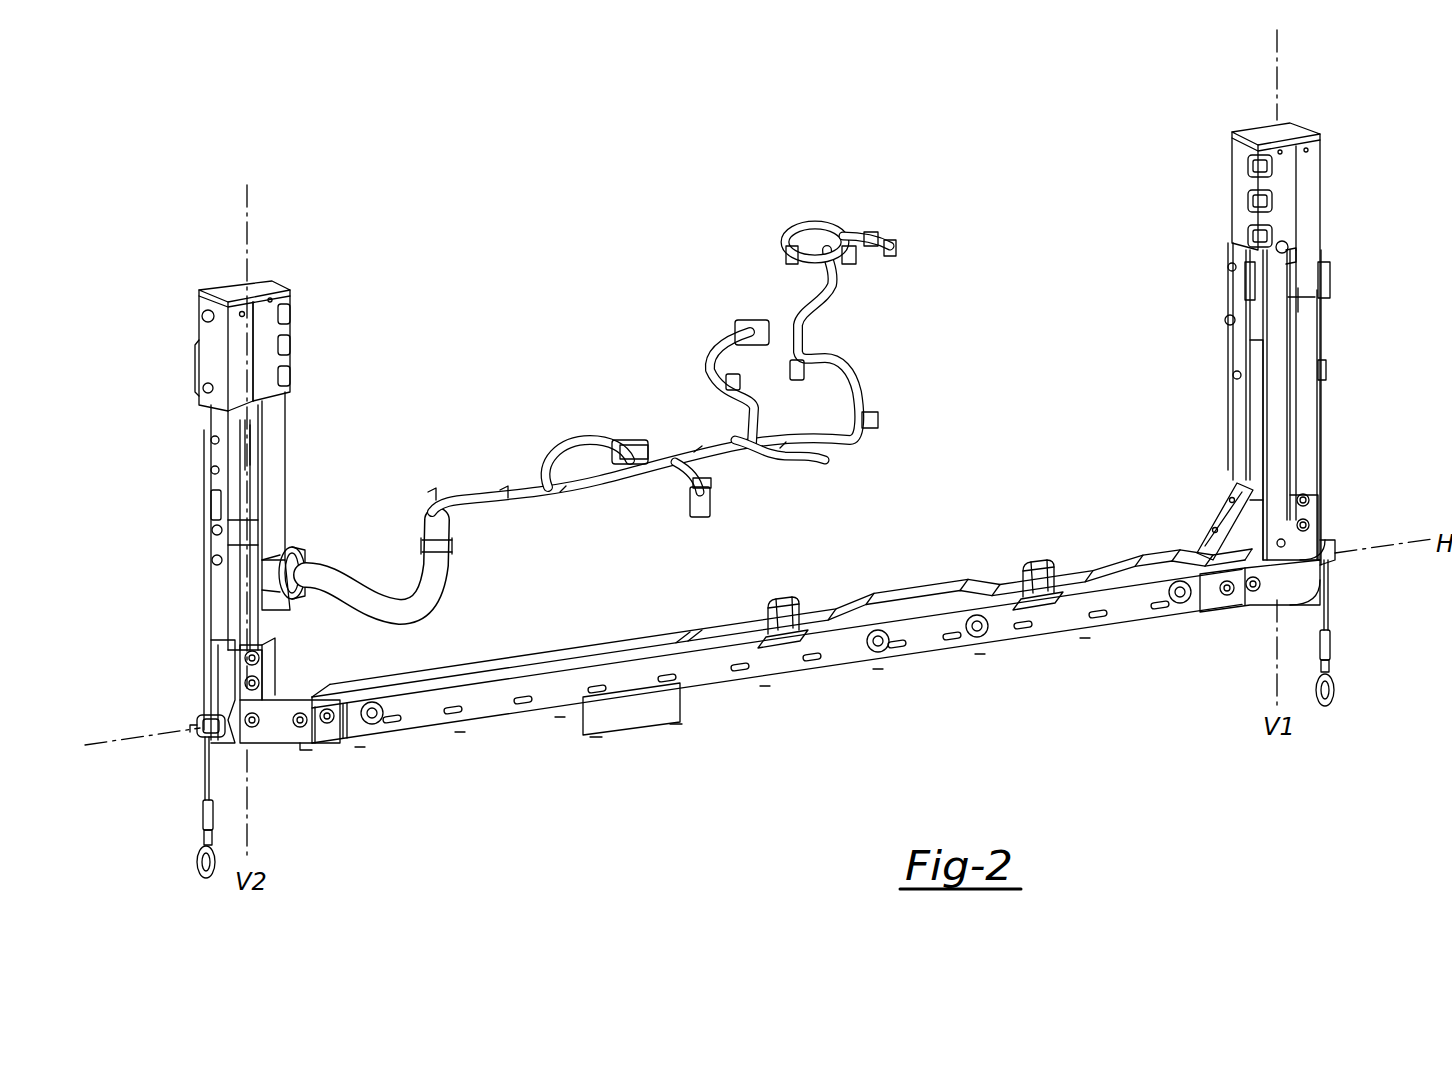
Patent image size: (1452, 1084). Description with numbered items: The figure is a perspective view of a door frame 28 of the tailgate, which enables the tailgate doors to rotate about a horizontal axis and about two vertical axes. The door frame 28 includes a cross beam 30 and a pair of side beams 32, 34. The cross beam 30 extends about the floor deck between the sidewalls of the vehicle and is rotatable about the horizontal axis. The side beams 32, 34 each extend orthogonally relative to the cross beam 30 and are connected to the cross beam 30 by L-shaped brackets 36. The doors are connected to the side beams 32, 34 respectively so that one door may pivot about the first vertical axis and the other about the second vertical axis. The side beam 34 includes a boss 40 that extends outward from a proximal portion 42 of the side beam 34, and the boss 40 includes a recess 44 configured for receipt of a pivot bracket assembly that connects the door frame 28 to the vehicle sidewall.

The door frame 28 is at (399, 781).
The cross beam 30 is at (487, 707).
The side beam 32 is at (1310, 340).
The side beam 34 is at (232, 503).
The L-shaped brackets 36 is at (270, 722).
The boss 40 is at (222, 740).
The proximal portion 42 is at (223, 682).
The recess 44 is at (198, 730).